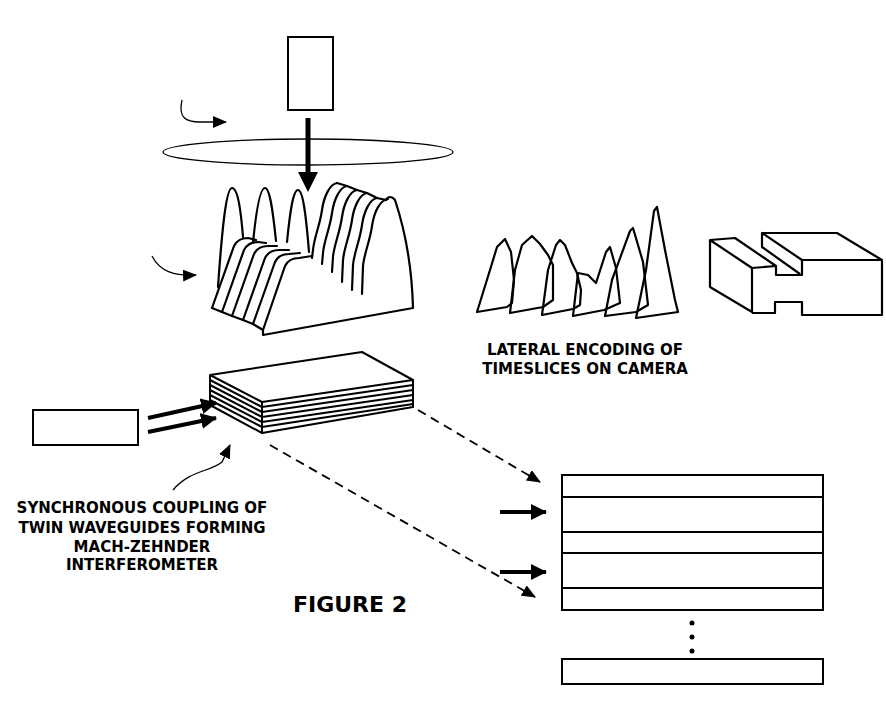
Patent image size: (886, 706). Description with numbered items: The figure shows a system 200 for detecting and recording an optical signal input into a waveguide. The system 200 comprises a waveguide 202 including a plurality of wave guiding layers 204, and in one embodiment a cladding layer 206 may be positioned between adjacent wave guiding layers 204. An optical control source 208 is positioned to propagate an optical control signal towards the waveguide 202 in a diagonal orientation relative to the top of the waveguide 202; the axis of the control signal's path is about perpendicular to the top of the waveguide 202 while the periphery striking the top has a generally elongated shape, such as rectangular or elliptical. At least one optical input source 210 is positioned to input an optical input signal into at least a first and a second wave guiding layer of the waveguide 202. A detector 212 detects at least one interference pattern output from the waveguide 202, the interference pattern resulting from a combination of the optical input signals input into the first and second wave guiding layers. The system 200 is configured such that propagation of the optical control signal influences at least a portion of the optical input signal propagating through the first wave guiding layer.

The system 200 is at (745, 72).
The waveguide 202 is at (202, 357).
The wave guiding layers 204 is at (692, 542).
The cladding layer 206 is at (692, 579).
The optical control source 208 is at (310, 73).
The optical input source 210 is at (85, 427).
The detector 212 is at (736, 220).